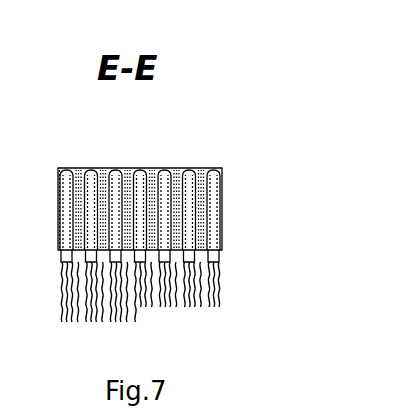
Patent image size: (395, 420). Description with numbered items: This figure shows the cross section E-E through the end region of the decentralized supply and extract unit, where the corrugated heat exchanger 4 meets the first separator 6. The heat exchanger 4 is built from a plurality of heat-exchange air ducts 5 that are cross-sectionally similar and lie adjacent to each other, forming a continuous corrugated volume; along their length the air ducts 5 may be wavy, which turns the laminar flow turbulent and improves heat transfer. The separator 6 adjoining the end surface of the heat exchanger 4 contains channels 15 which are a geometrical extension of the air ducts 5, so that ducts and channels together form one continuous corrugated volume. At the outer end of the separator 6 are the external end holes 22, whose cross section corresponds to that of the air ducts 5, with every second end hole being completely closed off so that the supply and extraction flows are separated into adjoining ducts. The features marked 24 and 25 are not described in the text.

The corrugated heat exchanger 4 is at (225, 293).
The heat-exchange air ducts 5 is at (85, 308).
The first separator 6 is at (228, 216).
The channels of the separator 15 is at (85, 207).
The external end holes 22 is at (88, 168).
The gap between pins 24 is at (130, 158).
The pin tip 25 is at (210, 171).